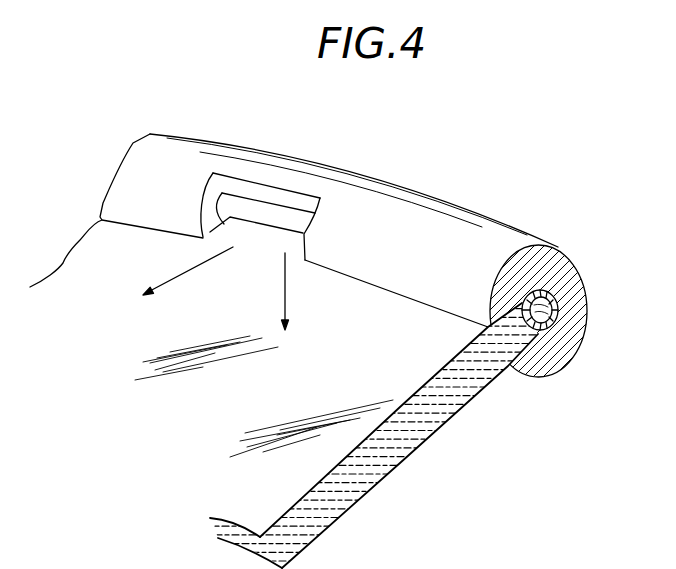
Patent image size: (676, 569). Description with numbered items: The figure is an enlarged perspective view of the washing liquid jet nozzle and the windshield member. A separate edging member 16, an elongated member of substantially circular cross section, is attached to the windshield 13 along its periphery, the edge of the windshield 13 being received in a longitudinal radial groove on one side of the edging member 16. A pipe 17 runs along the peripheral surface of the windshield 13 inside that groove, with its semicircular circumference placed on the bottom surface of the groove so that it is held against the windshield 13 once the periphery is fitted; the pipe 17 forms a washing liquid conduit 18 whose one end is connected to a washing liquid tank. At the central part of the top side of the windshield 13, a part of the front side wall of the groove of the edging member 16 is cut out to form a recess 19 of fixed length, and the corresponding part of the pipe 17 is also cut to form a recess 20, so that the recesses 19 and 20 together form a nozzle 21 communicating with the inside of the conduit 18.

The windshield 13 is at (337, 428).
The edging member 16 is at (380, 212).
The pipe 17 is at (553, 273).
The washing liquid conduit 18 is at (560, 310).
The recess 19 is at (208, 233).
The recess 20 is at (248, 200).
The nozzle 21 is at (268, 228).